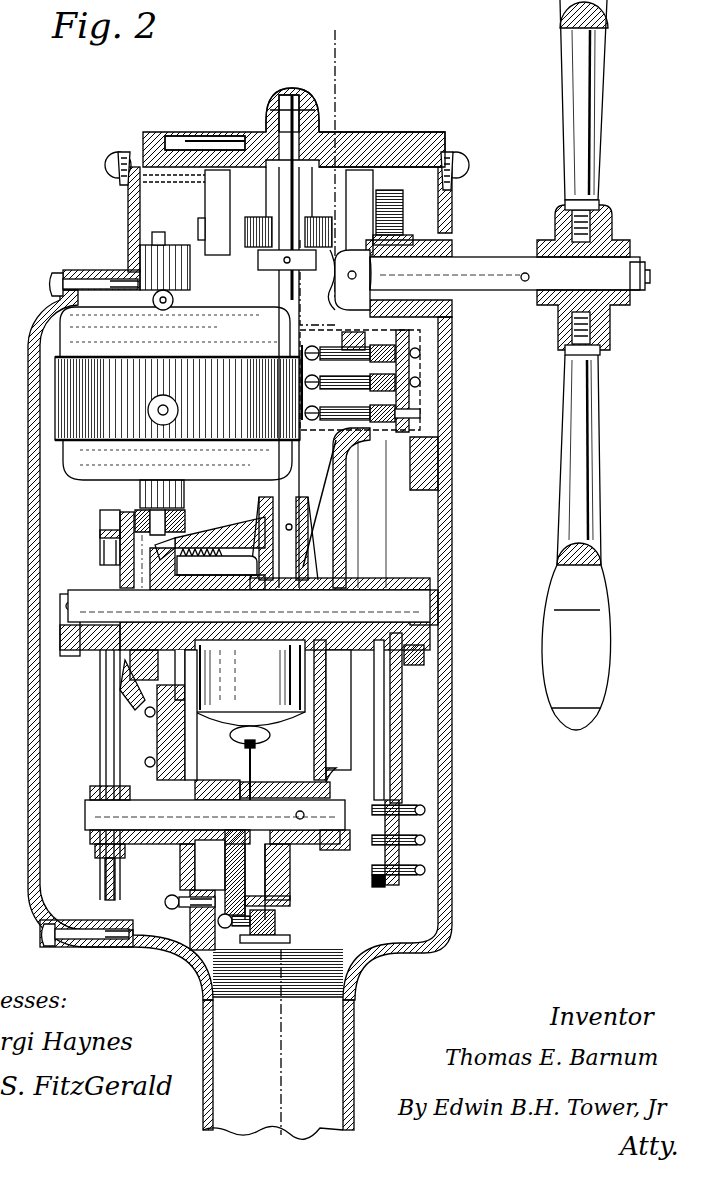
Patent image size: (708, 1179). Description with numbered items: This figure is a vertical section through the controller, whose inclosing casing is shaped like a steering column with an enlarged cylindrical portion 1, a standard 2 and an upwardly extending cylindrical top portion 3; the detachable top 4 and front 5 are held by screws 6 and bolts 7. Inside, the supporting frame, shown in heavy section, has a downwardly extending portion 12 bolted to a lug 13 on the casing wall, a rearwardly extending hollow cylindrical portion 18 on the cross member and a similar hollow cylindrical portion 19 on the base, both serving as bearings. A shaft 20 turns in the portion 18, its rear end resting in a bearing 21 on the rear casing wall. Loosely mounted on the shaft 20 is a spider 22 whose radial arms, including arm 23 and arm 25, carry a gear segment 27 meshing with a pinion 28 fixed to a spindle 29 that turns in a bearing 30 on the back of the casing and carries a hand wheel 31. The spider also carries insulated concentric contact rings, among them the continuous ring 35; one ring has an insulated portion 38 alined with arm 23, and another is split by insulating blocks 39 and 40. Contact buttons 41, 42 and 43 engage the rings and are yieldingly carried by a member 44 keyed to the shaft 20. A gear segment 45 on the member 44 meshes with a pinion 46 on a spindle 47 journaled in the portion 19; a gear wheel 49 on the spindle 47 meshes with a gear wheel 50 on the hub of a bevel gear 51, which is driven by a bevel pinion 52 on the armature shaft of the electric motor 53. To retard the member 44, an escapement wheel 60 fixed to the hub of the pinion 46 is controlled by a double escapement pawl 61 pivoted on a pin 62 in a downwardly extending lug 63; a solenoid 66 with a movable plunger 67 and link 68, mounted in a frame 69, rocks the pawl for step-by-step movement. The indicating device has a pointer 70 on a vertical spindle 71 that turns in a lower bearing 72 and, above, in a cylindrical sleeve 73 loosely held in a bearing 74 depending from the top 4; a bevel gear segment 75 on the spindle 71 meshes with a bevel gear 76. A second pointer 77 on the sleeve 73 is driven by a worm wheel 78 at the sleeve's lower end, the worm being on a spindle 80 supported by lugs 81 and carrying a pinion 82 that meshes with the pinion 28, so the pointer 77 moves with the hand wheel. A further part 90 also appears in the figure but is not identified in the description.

The enlarged cylindrical portion 1 is at (128, 222).
The standard 2 is at (353, 1040).
The cylindrical top portion 3 is at (306, 586).
The top 4 is at (421, 139).
The front 5 is at (29, 518).
The screws 6 is at (125, 156).
The bolts 7 is at (55, 280).
The downwardly extending portion 12 is at (180, 868).
The lug 13 is at (188, 912).
The hollow cylindrical portion 18 is at (207, 569).
The hollow cylindrical portion 19 is at (216, 792).
The shaft 20 is at (249, 606).
The bearing 21 is at (431, 598).
The spider 22 is at (396, 576).
The arm 23 is at (404, 531).
The arm 25 is at (401, 766).
The gear segment 27 is at (410, 338).
The pinion 28 is at (367, 308).
The spindle 29 is at (477, 256).
The bearing 30 is at (470, 312).
The hand wheel 31 is at (598, 422).
The contact ring 35 is at (380, 723).
The insulated portion 38 is at (426, 386).
The insulating block 39 is at (426, 357).
The insulating block 40 is at (382, 878).
The contact button 41 is at (406, 410).
The contact button 42 is at (406, 383).
The contact button 43 is at (406, 353).
The member 44 is at (334, 532).
The gear segment 45 is at (331, 768).
The pinion 46 is at (345, 850).
The spindle 47 is at (90, 810).
The gear wheel 49 is at (100, 870).
The gear wheel 50 is at (100, 681).
The bevel gear 51 is at (96, 670).
The bevel pinion 52 is at (186, 514).
The electric motor 53 is at (177, 370).
The escapement wheel 60 is at (292, 882).
The double escapement pawl 61 is at (275, 940).
The pin 62 is at (278, 922).
The lug 63 is at (220, 872).
The solenoid 66 is at (318, 690).
The plunger 67 is at (240, 742).
The link 68 is at (290, 903).
The frame 69 is at (250, 683).
The pointer 70 is at (218, 134).
The spindle 71 is at (289, 100).
The bearing 72 is at (303, 567).
The sleeve 73 is at (335, 247).
The bearing 74 is at (313, 185).
The bevel gear segment 75 is at (186, 535).
The bevel gear 76 is at (177, 561).
The pointer 77 is at (176, 133).
The worm wheel 78 is at (262, 258).
The spindle 80 is at (200, 232).
The lugs 81 is at (206, 204).
The pinion 82 is at (396, 212).
The brush holder 90 is at (158, 742).